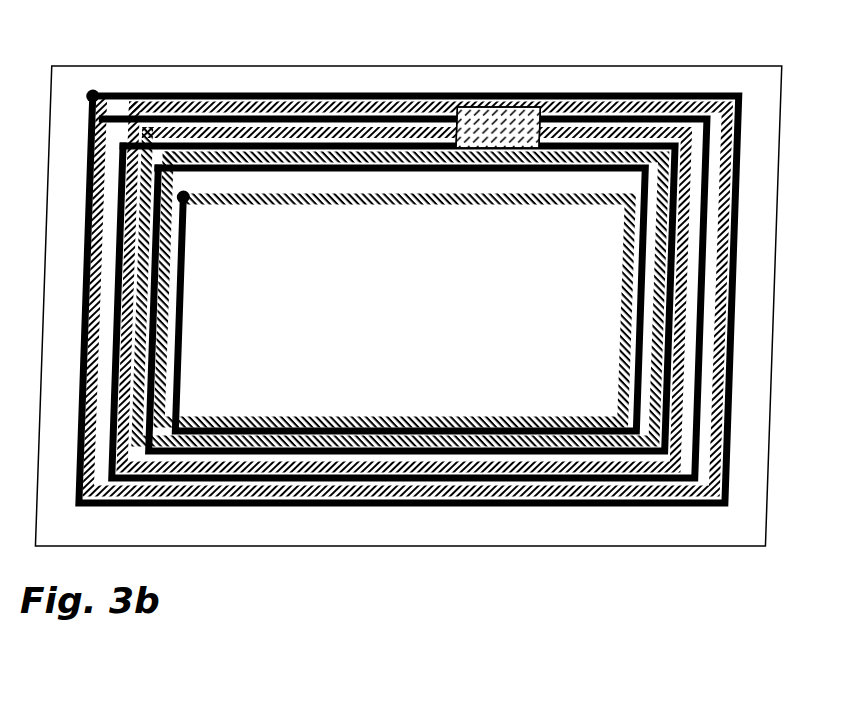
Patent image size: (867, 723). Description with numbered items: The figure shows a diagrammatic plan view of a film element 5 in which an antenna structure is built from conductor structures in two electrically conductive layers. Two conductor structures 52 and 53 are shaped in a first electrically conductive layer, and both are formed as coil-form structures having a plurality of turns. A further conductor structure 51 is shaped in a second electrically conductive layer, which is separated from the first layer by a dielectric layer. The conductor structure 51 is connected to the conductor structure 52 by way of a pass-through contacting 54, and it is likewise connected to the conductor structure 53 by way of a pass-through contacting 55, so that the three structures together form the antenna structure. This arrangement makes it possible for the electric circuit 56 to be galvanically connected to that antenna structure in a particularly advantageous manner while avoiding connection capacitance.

The film element 5 is at (488, 48).
The conductor structure 51 is at (188, 92).
The conductor structure 52 is at (247, 490).
The conductor structure 53 is at (371, 421).
The pass-through contacting 54 is at (95, 90).
The pass-through contacting 55 is at (190, 203).
The electric circuit 56 is at (470, 113).